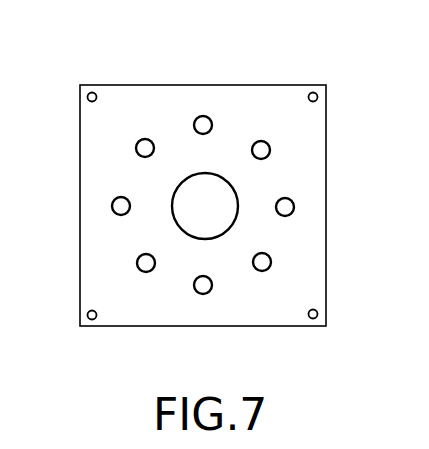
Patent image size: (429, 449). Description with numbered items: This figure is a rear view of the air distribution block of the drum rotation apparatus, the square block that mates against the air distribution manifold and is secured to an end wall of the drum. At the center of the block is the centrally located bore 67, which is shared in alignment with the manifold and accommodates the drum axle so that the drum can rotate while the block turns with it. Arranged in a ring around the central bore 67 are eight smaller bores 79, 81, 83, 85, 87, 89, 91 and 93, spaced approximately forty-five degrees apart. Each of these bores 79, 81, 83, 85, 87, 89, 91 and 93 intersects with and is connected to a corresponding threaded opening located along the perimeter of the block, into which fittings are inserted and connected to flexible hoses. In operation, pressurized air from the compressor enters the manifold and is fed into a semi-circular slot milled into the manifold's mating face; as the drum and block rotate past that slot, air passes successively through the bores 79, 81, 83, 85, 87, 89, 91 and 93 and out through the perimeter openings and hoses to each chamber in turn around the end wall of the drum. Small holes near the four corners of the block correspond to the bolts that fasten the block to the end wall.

The centrally located bore 67 is at (203, 203).
The bore 79 is at (270, 149).
The bore 81 is at (294, 207).
The bore 83 is at (271, 263).
The bore 85 is at (196, 294).
The bore 87 is at (137, 264).
The bore 89 is at (112, 206).
The bore 91 is at (136, 147).
The bore 93 is at (203, 116).